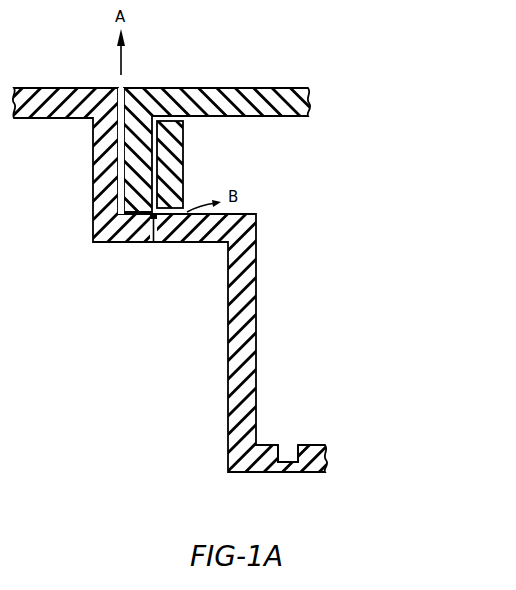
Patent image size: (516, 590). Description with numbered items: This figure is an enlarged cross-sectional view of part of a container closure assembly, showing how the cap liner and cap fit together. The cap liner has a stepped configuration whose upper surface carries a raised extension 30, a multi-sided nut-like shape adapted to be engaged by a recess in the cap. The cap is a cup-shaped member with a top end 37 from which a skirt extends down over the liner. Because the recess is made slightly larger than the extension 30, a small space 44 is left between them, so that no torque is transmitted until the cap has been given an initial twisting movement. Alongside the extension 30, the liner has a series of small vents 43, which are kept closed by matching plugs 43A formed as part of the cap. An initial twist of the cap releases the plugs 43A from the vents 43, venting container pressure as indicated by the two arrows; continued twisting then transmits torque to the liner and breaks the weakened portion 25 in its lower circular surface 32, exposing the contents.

The extension 30 is at (55, 113).
The top end 37 is at (258, 97).
The small space 44 is at (118, 88).
The vents 43 is at (158, 228).
The plugs 43A is at (152, 226).
The lower circular surface 32 is at (255, 468).
The weakened portion 25 is at (287, 467).